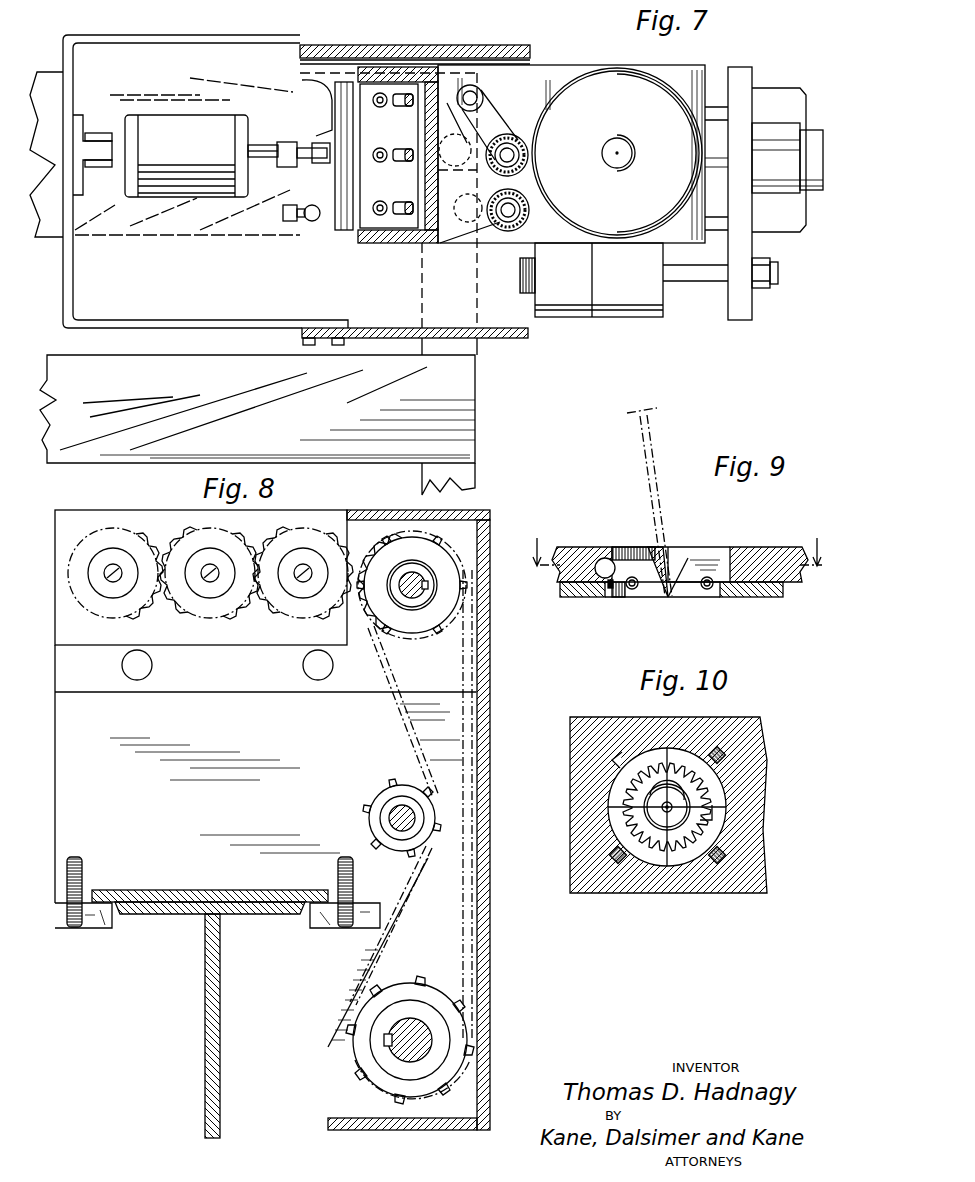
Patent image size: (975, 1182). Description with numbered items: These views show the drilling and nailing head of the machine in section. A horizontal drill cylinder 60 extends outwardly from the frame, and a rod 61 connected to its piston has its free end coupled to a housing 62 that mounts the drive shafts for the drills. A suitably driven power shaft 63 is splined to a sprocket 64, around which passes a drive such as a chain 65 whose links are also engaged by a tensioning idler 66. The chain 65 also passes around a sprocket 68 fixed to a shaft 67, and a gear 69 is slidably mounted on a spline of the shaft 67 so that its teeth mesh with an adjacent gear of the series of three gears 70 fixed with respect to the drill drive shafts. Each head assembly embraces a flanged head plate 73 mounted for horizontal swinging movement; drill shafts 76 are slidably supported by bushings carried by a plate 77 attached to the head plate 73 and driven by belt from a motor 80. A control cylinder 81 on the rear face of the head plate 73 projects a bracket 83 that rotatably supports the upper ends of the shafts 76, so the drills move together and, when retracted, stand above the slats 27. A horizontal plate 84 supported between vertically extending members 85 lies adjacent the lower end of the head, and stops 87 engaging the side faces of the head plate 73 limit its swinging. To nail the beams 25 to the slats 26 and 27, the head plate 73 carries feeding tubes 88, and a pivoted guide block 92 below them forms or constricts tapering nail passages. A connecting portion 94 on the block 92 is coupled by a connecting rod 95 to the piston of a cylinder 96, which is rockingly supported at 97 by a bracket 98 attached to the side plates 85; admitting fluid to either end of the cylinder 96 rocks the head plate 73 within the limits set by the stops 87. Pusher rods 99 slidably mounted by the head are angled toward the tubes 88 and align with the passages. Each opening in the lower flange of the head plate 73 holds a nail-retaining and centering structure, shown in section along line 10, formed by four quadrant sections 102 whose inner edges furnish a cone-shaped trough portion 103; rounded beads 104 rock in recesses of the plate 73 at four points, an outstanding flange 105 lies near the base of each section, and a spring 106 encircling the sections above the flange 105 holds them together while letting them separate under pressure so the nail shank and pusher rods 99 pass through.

In FIG. 9, the section line 10 is at (676, 569).
In FIG. 7, the beam 25 is at (477, 355).
In FIG. 7, the slat 26 is at (470, 386).
In FIG. 7, the slat 27 is at (166, 232).
In FIG. 7, the cylinder 60 is at (791, 122).
In FIG. 7, the rod 61 is at (717, 172).
In FIG. 7, the housing 62 is at (618, 305).
In FIG. 8, the power shaft 63 is at (426, 1036).
In FIG. 8, the sprocket 64 is at (430, 995).
In FIG. 8, the chain 65 is at (468, 869).
In FIG. 8, the tensioning idler 66 is at (386, 795).
In FIG. 7, the shaft 67 is at (699, 283).
In FIG. 8, the shaft 67 is at (407, 601).
In FIG. 8, the sprocket 68 is at (433, 560).
In FIG. 8, the gear 69 is at (376, 507).
In FIG. 8, the gears 70 is at (273, 612).
In FIG. 7, the head plate 73 is at (373, 243).
In FIG. 9, the head plate 73 is at (771, 560).
In FIG. 10, the head plate 73 is at (750, 725).
In FIG. 7, the shaft 76 is at (474, 96).
In FIG. 7, the plate 77 is at (705, 69).
In FIG. 7, the motor 80 is at (592, 117).
In FIG. 7, the control cylinder 81 is at (526, 204).
In FIG. 7, the bracket 83 is at (506, 131).
In FIG. 7, the plate 84 is at (302, 284).
In FIG. 7, the vertically extending member 85 is at (445, 26).
In FIG. 7, the stop 87 is at (283, 213).
In FIG. 7, the feeding tube 88 is at (376, 147).
In FIG. 7, the block 92 is at (303, 66).
In FIG. 7, the connecting portion 94 is at (312, 127).
In FIG. 7, the connecting rod 95 is at (261, 142).
In FIG. 7, the cylinder 96 is at (192, 141).
In FIG. 7, the rocking support 97 is at (102, 133).
In FIG. 7, the bracket 98 is at (203, 23).
In FIG. 7, the pusher rod 99 is at (411, 201).
In FIG. 9, the quadrant section 102 is at (686, 592).
In FIG. 10, the quadrant section 102 is at (712, 787).
In FIG. 9, the cone-shaped trough portion 103 is at (680, 560).
In FIG. 10, the cone-shaped trough portion 103 is at (683, 822).
In FIG. 9, the bead 104 is at (603, 560).
In FIG. 10, the bead 104 is at (722, 762).
In FIG. 9, the flange 105 is at (634, 592).
In FIG. 9, the spring 106 is at (707, 590).
In FIG. 10, the spring 106 is at (715, 835).